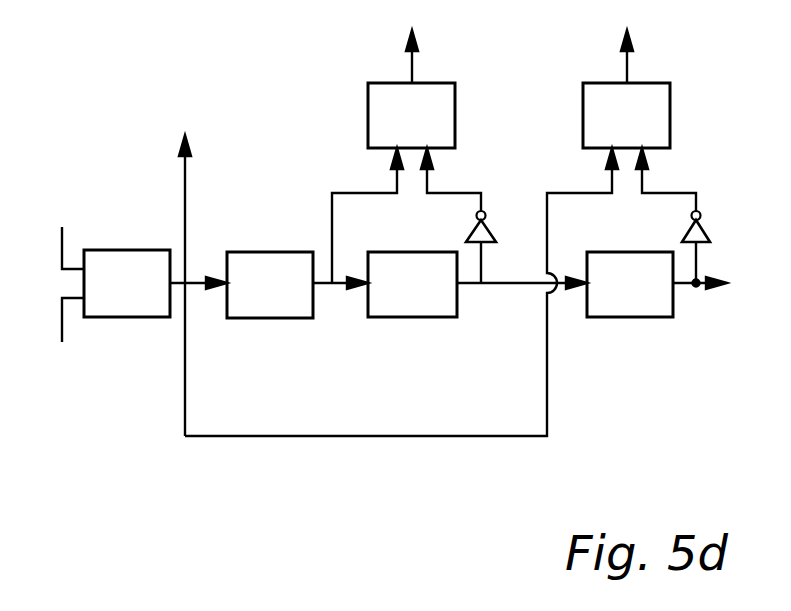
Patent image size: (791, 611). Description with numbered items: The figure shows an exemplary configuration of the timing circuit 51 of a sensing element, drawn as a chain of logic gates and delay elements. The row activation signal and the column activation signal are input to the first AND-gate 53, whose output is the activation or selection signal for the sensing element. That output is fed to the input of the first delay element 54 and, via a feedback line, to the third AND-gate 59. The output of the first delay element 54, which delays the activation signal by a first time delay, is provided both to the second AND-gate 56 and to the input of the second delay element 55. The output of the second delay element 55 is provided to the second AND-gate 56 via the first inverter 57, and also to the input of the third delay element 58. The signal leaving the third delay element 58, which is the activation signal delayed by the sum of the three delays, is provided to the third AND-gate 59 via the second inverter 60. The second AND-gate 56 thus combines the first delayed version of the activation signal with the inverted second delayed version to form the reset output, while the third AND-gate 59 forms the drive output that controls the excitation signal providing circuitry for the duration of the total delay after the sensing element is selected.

The timing circuit 51 is at (357, 455).
The first AND-gate 53 is at (150, 318).
The first delay element 54 is at (270, 318).
The second delay element 55 is at (412, 318).
The second AND-gate 56 is at (455, 110).
The first inverter 57 is at (493, 231).
The third delay element 58 is at (630, 318).
The third AND-gate 59 is at (670, 110).
The second inverter 60 is at (707, 231).